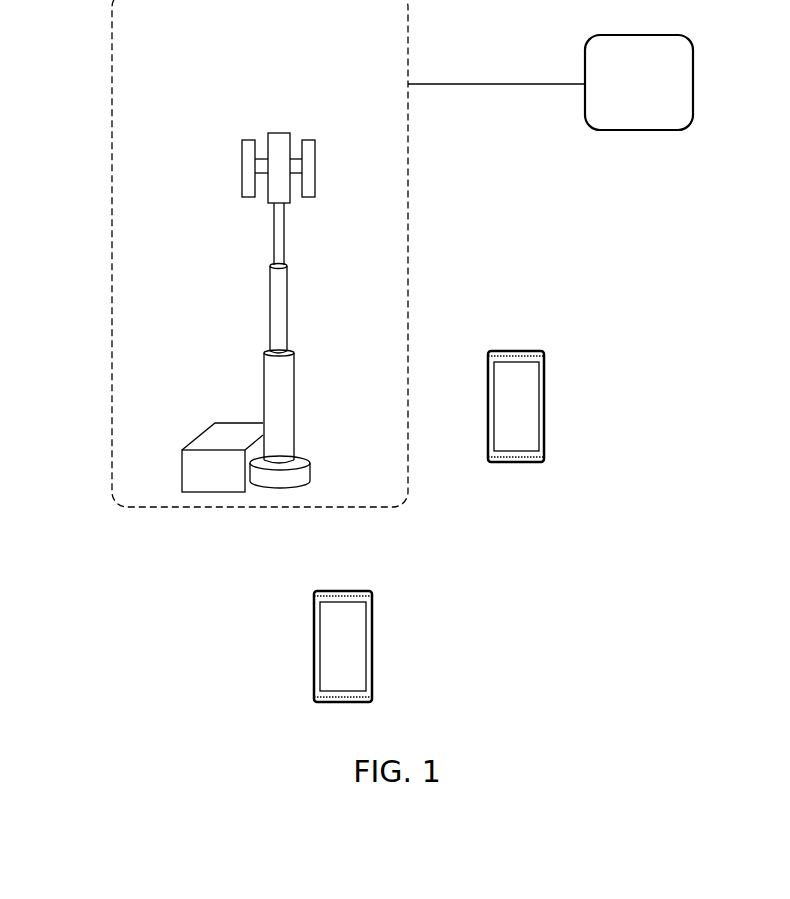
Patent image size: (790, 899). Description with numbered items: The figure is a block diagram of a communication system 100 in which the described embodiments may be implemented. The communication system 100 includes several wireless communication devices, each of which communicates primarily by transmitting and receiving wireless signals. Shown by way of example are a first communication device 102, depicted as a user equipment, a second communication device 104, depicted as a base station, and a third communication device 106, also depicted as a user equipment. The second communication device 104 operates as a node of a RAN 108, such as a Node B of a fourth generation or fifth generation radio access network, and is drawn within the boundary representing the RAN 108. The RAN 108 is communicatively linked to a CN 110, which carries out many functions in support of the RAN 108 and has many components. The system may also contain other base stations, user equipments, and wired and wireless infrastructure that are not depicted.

The communication system 100 is at (575, 593).
The first communication device 102 is at (548, 390).
The second communication device 104 is at (218, 282).
The third communication device 106 is at (375, 630).
The RAN 108 is at (112, 102).
The CN 110 is at (620, 130).